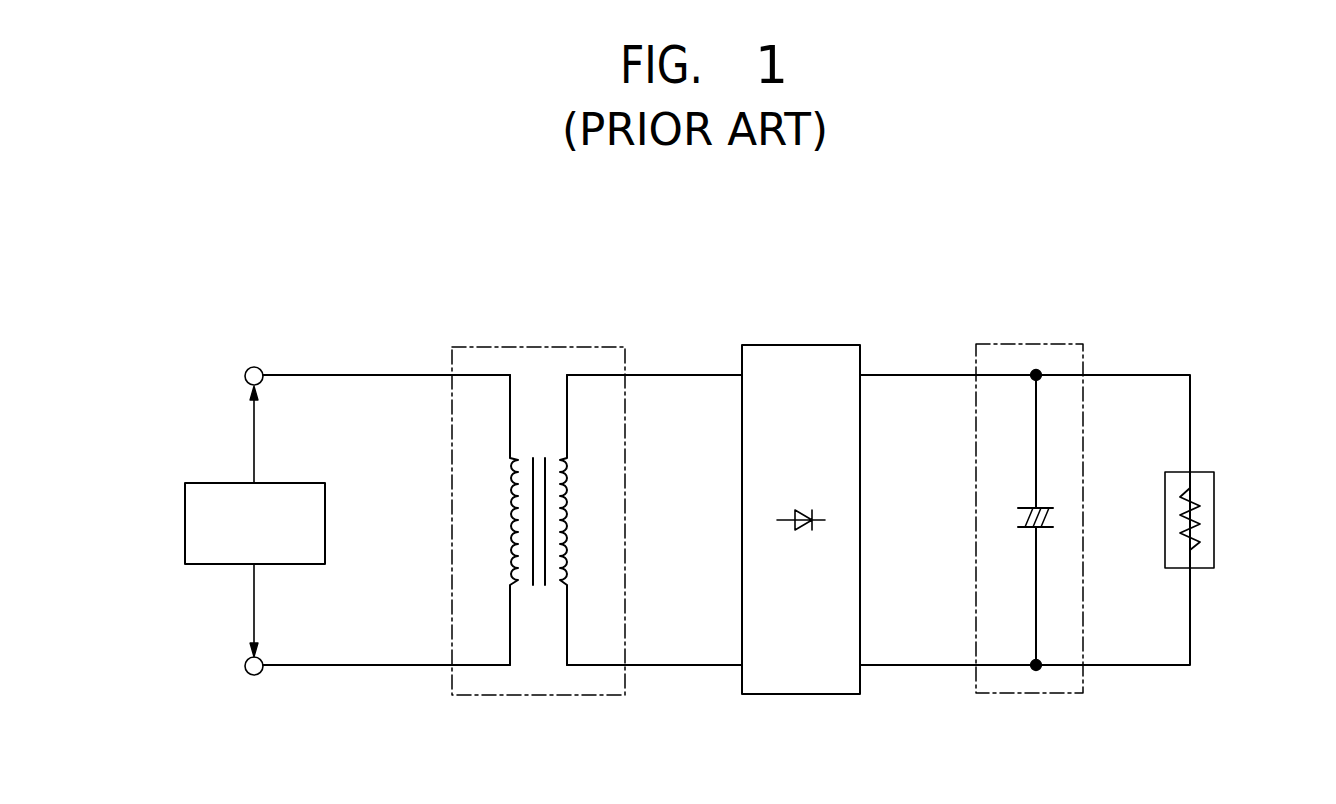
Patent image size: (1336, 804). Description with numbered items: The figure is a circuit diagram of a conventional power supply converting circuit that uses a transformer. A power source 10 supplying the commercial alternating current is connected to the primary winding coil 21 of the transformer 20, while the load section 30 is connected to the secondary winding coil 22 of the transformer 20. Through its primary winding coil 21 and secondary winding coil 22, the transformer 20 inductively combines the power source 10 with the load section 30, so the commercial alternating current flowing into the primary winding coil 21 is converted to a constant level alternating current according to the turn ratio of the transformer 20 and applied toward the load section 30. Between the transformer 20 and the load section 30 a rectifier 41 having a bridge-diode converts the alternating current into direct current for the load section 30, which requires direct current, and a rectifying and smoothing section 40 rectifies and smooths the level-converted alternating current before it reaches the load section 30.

The power source 10 is at (218, 482).
The transformer 20 is at (541, 508).
The primary winding coil 21 is at (504, 568).
The secondary winding coil 22 is at (574, 568).
The rectifier 41 is at (801, 345).
The rectifying and smoothing section 40 is at (1030, 344).
The load section 30 is at (1212, 472).